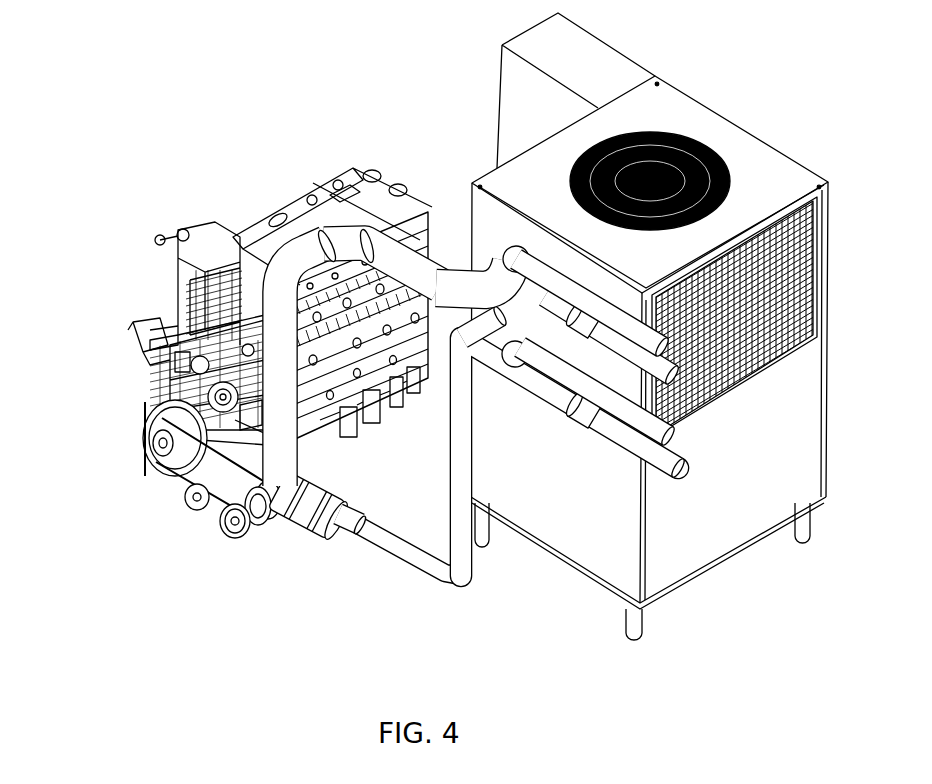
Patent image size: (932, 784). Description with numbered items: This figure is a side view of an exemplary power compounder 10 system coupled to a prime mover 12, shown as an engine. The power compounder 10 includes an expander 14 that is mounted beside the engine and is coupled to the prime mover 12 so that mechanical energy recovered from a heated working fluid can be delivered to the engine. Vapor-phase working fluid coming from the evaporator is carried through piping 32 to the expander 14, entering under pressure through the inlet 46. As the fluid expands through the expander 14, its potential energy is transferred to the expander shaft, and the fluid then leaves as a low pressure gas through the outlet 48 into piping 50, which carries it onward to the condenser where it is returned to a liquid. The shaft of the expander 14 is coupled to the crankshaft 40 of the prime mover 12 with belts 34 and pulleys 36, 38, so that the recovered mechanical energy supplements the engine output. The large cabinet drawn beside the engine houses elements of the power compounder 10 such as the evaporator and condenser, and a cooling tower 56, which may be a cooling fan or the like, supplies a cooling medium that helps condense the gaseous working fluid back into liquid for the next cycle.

The power compounder 10 is at (580, 700).
The prime mover 12 is at (240, 237).
The expander 14 is at (285, 540).
The piping 32 is at (468, 568).
The belts 34 is at (183, 503).
The pulley 36 is at (233, 537).
The pulley 38 is at (148, 462).
The crankshaft 40 is at (150, 410).
The inlet 46 is at (307, 533).
The outlet 48 is at (320, 478).
The piping 50 is at (410, 263).
The cooling tower 56 is at (707, 150).